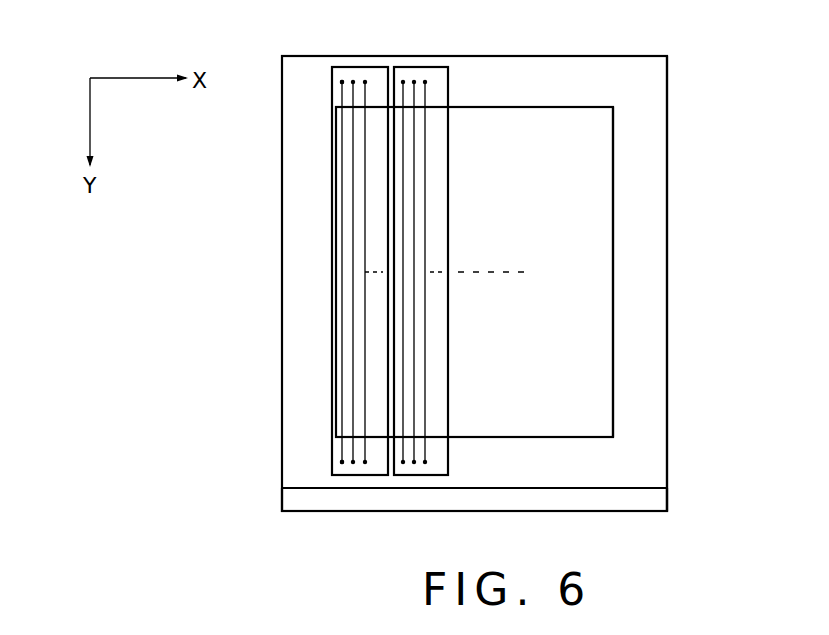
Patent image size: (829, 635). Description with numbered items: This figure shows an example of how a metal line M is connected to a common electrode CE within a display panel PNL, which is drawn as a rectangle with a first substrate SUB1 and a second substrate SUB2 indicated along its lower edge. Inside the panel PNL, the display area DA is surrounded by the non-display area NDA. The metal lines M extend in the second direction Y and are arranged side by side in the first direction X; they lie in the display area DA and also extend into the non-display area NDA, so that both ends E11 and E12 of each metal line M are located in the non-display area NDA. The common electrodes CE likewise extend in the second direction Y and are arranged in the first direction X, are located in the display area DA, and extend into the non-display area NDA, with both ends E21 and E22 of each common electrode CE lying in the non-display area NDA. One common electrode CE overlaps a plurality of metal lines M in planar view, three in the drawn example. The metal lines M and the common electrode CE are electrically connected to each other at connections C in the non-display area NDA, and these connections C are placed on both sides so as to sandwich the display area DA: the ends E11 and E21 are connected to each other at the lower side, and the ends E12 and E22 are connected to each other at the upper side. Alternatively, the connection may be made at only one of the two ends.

The display panel PNL is at (671, 59).
The first substrate SUB1 is at (654, 500).
The second substrate SUB2 is at (654, 470).
The display area DA is at (616, 167).
The non-display area NDA is at (647, 216).
The common electrode CE is at (377, 66).
The metal line M is at (363, 342).
The connection C is at (365, 80).
The end of common electrode E22 is at (321, 66).
The end of metal line E12 is at (325, 88).
The end of metal line E11 is at (326, 454).
The end of common electrode E21 is at (320, 472).